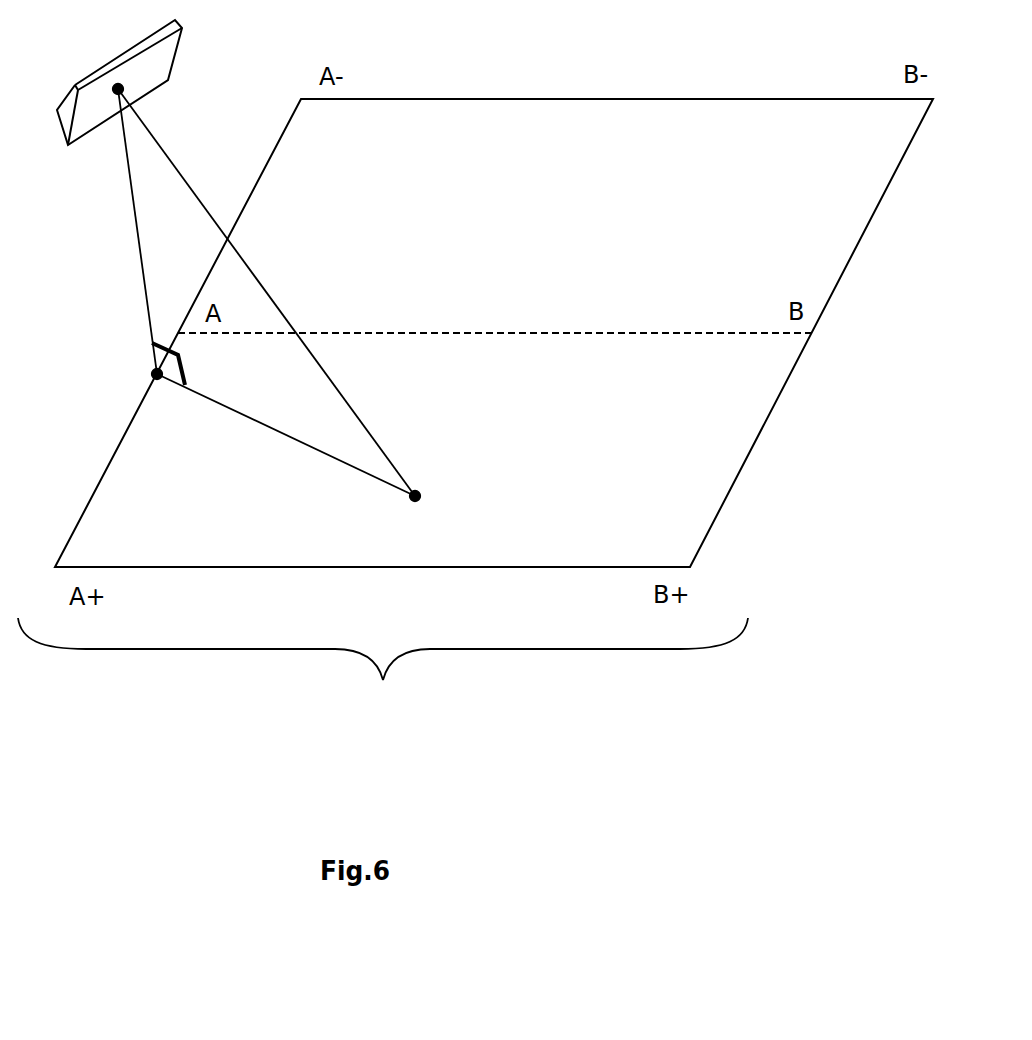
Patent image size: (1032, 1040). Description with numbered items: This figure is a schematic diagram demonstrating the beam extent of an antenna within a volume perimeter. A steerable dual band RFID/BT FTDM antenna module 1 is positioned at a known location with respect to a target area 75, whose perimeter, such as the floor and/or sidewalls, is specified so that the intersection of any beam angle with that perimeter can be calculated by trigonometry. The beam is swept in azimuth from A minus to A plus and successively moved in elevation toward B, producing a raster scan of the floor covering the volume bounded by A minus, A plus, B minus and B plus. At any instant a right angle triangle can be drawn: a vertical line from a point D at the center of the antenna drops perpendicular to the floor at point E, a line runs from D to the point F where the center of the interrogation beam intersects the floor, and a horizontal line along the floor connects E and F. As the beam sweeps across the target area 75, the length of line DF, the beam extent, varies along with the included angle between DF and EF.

The FTDM antenna module 1 is at (65, 118).
The target area 75 is at (383, 665).
The point D is at (130, 87).
The point E is at (148, 373).
The point F is at (423, 513).